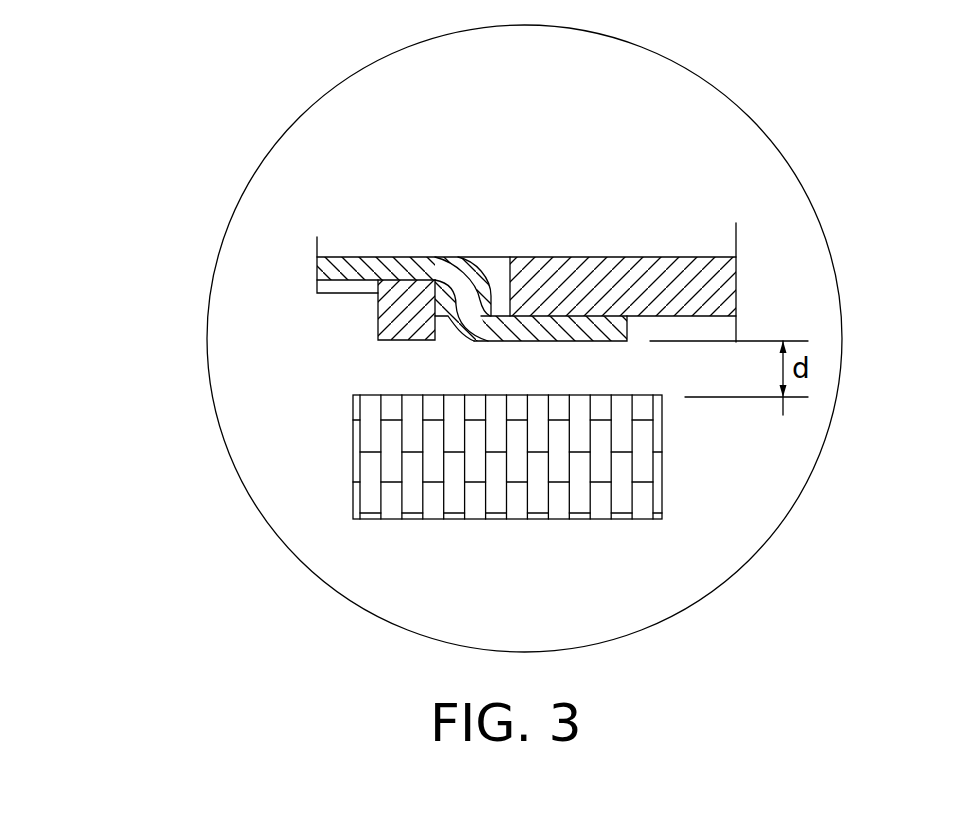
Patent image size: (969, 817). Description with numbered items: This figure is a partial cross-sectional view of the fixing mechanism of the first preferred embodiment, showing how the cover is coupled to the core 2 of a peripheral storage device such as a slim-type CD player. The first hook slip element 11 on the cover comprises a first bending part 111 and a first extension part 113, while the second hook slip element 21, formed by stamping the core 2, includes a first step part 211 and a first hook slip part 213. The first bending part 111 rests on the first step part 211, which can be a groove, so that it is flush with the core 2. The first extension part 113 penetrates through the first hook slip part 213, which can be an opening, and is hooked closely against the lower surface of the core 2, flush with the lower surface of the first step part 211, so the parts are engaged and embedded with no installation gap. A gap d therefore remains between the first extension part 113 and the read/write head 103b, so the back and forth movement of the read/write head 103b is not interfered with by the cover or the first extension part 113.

The core 2 is at (636, 256).
The first hook slip element 11 is at (598, 92).
The first bending part 111 is at (475, 258).
The first extension part 113 is at (548, 262).
The second hook slip element 21 is at (90, 345).
The first step part 211 is at (388, 295).
The first hook slip part 213 is at (450, 328).
The read/write head 103b is at (557, 498).